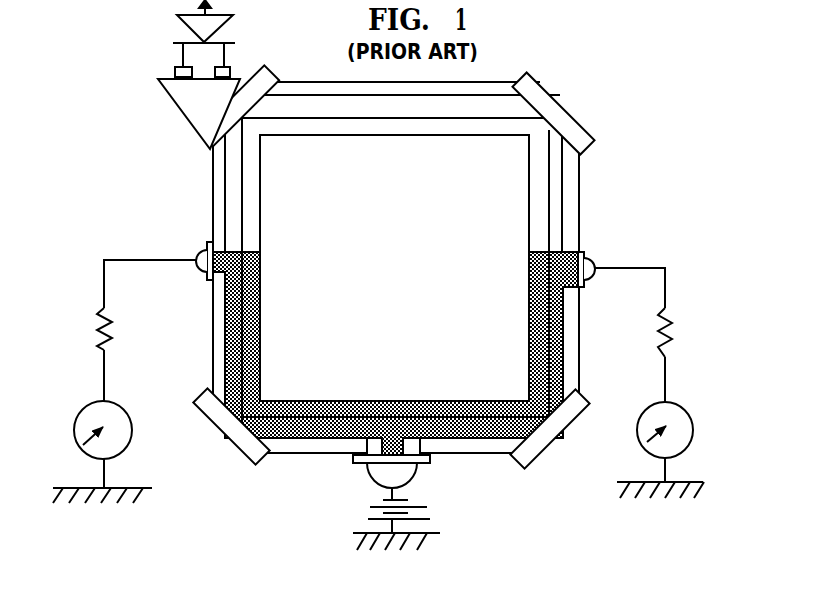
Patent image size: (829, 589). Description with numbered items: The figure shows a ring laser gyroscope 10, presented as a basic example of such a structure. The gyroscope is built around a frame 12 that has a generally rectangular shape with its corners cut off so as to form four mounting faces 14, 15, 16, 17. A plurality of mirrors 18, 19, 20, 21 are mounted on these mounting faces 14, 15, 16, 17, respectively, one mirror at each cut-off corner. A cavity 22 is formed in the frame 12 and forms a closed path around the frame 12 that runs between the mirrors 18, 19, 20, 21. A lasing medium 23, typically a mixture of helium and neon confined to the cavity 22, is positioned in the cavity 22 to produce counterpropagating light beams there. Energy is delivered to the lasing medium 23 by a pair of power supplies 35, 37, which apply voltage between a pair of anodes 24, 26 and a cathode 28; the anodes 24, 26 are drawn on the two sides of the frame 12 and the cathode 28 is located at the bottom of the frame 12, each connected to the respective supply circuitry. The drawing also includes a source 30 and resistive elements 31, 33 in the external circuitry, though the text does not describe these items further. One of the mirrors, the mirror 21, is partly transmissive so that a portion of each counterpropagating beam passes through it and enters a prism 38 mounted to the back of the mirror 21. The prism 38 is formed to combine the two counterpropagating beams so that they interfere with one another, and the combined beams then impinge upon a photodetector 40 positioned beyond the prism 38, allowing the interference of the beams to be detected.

The ring laser gyroscope 10 is at (124, 185).
The frame 12 is at (587, 193).
The mounting face 14 is at (246, 452).
The mounting face 15 is at (527, 463).
The mounting face 16 is at (577, 138).
The mounting face 17 is at (200, 140).
The mirror 18 is at (212, 421).
The mirror 19 is at (578, 420).
The mirror 20 is at (547, 85).
The mirror 21 is at (192, 112).
The cavity 22 is at (232, 202).
The lasing medium 23 is at (260, 308).
The anode 24 is at (200, 253).
The anode 26 is at (593, 263).
The cathode 28 is at (410, 478).
The voltage source 30 is at (344, 513).
The resistor 31 is at (115, 338).
The resistor 33 is at (670, 345).
The power supply 35 is at (127, 412).
The power supply 37 is at (650, 405).
The prism 38 is at (170, 93).
The photodetector 40 is at (228, 18).